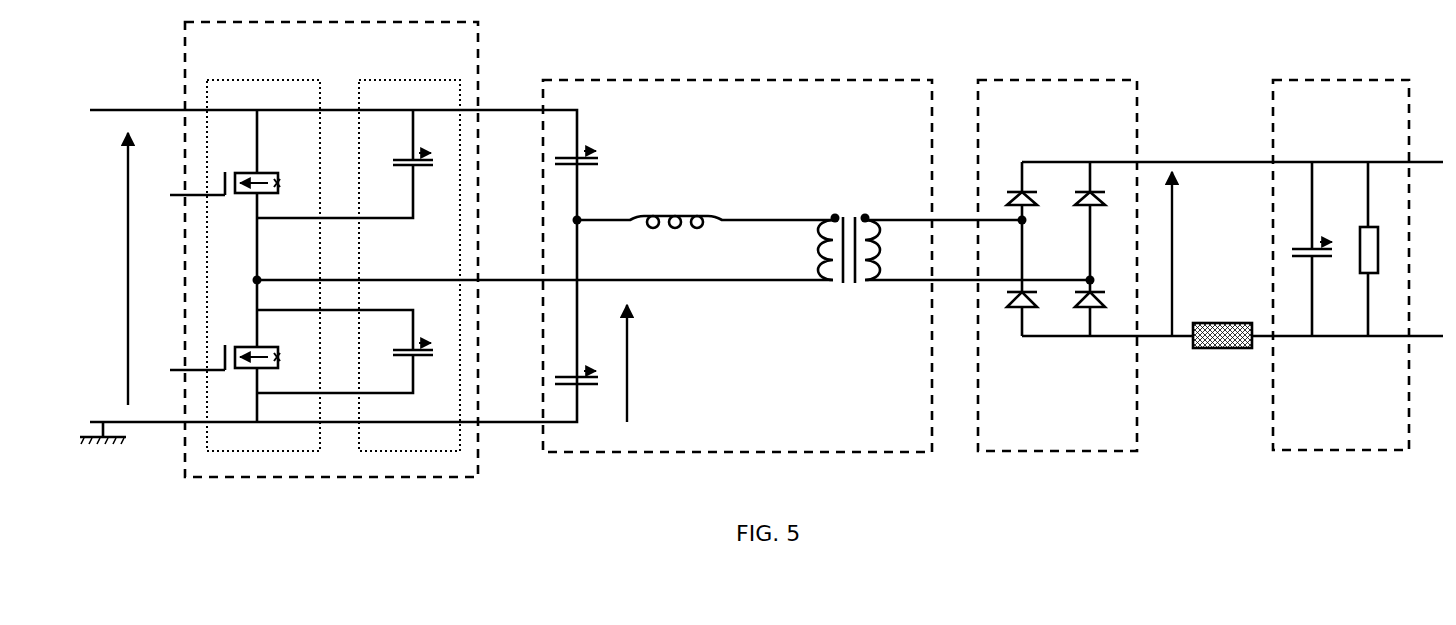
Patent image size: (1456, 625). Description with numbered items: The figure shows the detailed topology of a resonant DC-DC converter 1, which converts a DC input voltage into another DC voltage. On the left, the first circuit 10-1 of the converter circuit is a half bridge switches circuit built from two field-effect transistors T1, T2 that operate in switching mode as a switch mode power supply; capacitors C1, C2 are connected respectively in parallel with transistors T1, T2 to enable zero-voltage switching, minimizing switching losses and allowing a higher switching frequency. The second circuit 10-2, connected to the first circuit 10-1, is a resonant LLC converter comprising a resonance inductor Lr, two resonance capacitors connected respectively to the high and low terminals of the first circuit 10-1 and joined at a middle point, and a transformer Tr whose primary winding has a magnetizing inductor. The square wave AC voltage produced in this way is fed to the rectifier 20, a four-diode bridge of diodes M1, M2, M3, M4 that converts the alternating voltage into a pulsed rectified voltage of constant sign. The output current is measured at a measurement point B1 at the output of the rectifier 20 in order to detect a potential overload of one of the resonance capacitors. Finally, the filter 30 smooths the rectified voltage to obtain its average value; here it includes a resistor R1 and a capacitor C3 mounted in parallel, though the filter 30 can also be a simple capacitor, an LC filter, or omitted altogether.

The resonant DC-DC converter 1 is at (127, 31).
The first circuit 10-1 is at (324, 238).
The second circuit 10-2 is at (816, 252).
The rectifier 20 is at (1210, 252).
The filter 30 is at (1341, 249).
The transistor T1 is at (226, 195).
The transistor T2 is at (226, 351).
The capacitor C1 is at (347, 164).
The capacitor C2 is at (347, 351).
The resonance inductor Lr is at (705, 234).
The transformer Tr is at (954, 234).
The diode M1 is at (1013, 191).
The diode M2 is at (1012, 278).
The diode M3 is at (1099, 221).
The diode M4 is at (1099, 308).
The measurement point B1 is at (1222, 349).
The capacitor C3 is at (1315, 249).
The resistor R1 is at (1378, 249).